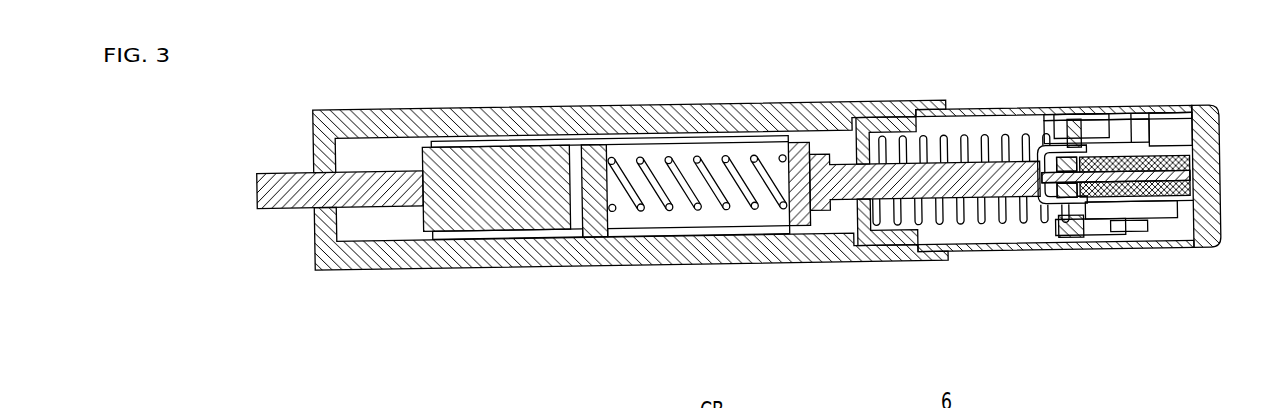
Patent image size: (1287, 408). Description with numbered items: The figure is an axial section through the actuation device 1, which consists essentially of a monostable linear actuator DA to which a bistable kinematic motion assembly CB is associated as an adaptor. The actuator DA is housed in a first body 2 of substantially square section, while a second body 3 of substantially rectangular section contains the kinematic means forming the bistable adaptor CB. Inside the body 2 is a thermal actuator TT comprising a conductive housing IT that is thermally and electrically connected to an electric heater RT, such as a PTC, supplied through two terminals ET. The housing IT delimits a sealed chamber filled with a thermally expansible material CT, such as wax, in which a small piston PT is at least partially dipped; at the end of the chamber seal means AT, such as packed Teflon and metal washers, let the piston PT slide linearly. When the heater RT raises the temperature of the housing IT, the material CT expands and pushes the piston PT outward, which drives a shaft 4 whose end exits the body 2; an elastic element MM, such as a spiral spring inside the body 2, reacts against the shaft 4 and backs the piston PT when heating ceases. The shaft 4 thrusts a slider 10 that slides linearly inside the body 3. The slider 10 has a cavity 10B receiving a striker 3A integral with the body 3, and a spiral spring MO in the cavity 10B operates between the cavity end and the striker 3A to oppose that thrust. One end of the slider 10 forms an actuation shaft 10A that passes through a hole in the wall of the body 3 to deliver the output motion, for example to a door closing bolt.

The actuation device 1 is at (756, 192).
The first body 2 is at (1038, 179).
The second body 3 is at (630, 185).
The striker 3A is at (594, 191).
The shaft 4 is at (914, 182).
The slider 10 is at (496, 188).
The actuation shaft 10A is at (340, 190).
The cavity 10B is at (610, 188).
The bistable kinematic motion assembly CB is at (630, 185).
The spiral spring MO is at (697, 183).
The elastic element MM is at (970, 179).
The seal means AT is at (1062, 174).
The linear actuator DA is at (1096, 131).
The terminals ET is at (1090, 175).
The thermal actuator TT is at (1162, 129).
The housing IT is at (1118, 116).
The thermally expansible material CT is at (1135, 176).
The electric heater RT is at (1139, 216).
The small piston PT is at (1116, 176).